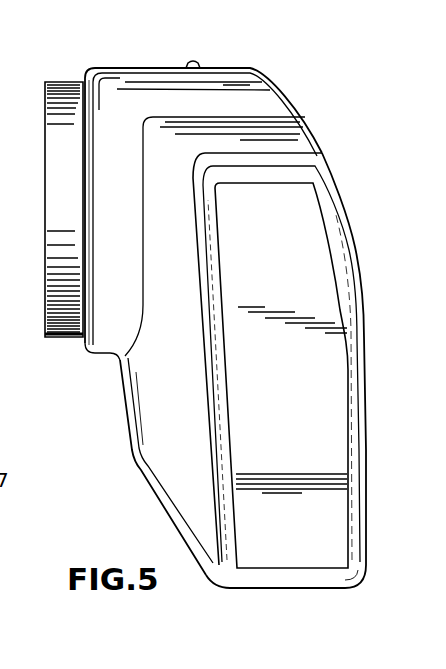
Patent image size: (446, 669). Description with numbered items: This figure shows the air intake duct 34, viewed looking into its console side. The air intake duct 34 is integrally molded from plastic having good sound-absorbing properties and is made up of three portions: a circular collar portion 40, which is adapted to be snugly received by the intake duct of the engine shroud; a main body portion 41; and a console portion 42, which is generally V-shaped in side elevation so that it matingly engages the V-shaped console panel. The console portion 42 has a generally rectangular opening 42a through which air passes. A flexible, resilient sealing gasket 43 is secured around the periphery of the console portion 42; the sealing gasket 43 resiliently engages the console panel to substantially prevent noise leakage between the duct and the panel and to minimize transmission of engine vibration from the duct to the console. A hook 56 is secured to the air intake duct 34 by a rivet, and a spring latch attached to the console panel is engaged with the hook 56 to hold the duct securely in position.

The circular collar portion 40 is at (72, 97).
The main body portion 41 is at (268, 96).
The console portion 42 is at (352, 250).
The rectangular opening 42a is at (318, 382).
The air intake duct 34 is at (146, 430).
The sealing gasket 43 is at (268, 580).
The hook 56 is at (190, 60).